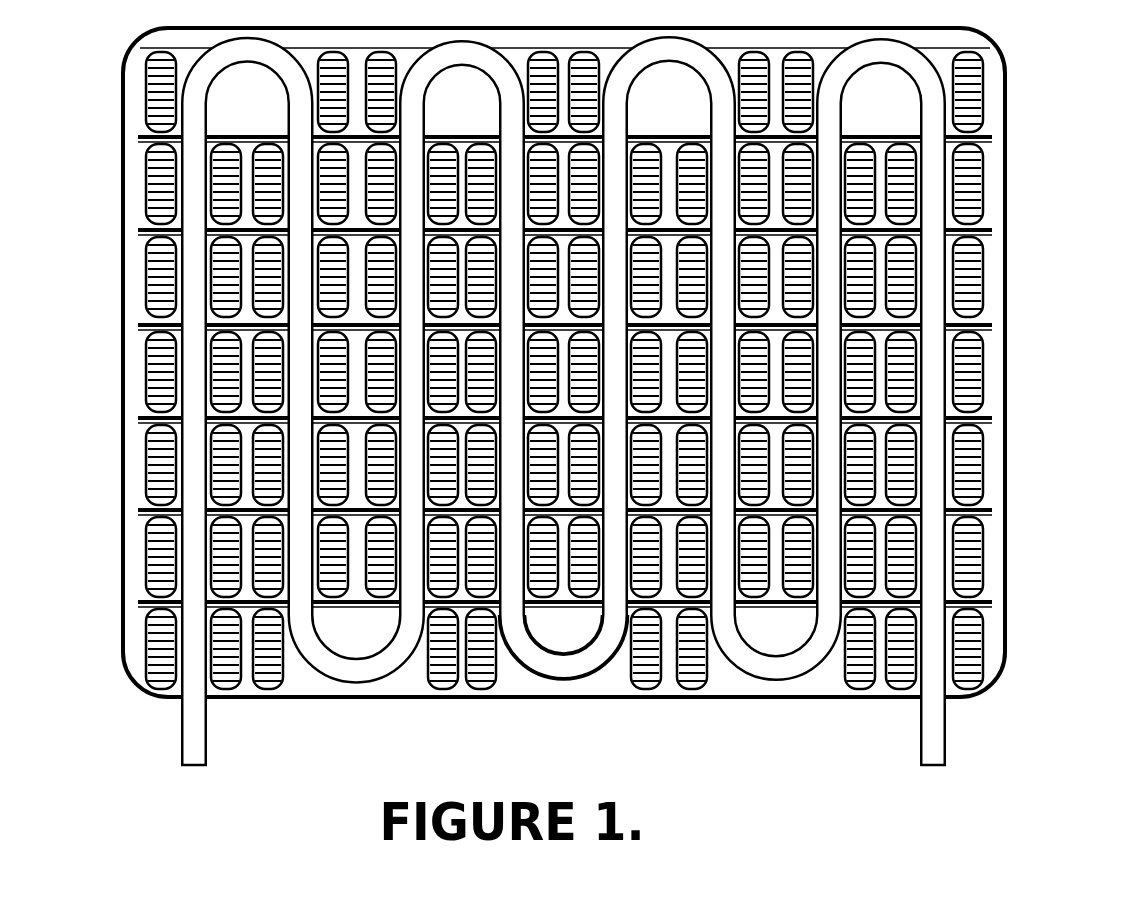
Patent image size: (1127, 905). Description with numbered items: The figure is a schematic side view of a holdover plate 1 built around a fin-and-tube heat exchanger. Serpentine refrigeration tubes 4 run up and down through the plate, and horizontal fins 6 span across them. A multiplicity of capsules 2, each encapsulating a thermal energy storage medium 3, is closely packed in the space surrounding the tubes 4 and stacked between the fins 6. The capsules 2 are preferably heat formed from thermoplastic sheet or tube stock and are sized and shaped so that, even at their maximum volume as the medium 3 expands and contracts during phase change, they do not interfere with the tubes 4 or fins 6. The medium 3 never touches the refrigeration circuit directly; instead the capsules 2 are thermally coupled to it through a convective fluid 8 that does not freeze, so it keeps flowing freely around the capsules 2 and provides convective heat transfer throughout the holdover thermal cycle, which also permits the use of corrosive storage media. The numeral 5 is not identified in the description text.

The holdover plate 1 is at (1007, 373).
The capsules 2 is at (977, 118).
The thermal energy storage medium 3 is at (970, 212).
The tubes 4 is at (950, 430).
The serpentine tube 5 is at (753, 607).
The fins 6 is at (988, 597).
The convective fluid 8 is at (547, 628).